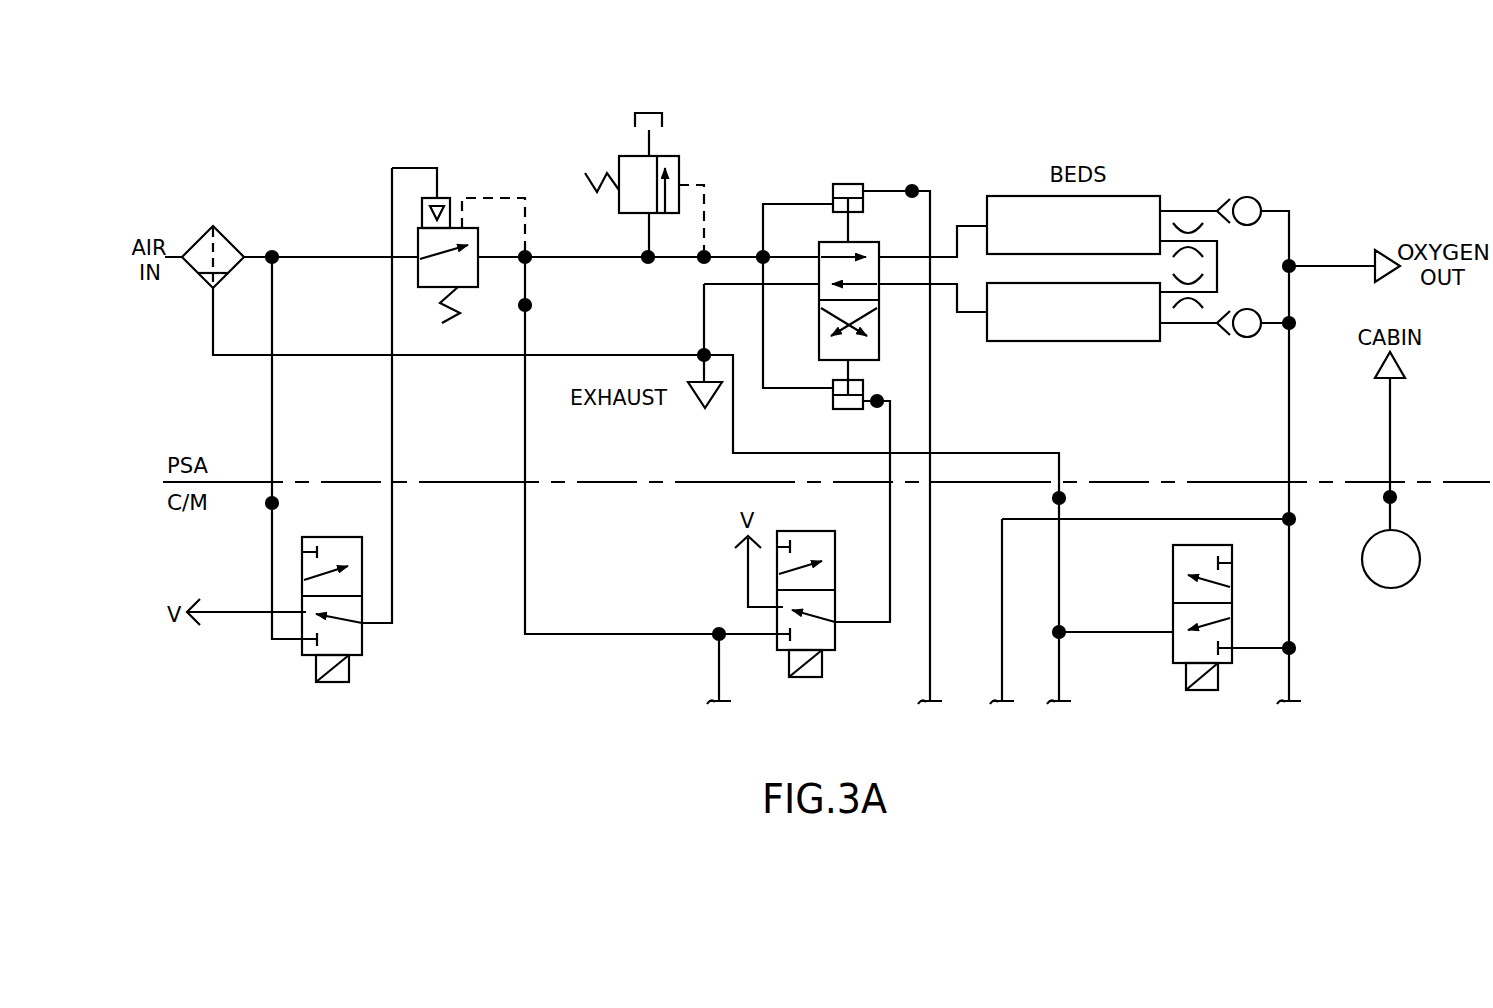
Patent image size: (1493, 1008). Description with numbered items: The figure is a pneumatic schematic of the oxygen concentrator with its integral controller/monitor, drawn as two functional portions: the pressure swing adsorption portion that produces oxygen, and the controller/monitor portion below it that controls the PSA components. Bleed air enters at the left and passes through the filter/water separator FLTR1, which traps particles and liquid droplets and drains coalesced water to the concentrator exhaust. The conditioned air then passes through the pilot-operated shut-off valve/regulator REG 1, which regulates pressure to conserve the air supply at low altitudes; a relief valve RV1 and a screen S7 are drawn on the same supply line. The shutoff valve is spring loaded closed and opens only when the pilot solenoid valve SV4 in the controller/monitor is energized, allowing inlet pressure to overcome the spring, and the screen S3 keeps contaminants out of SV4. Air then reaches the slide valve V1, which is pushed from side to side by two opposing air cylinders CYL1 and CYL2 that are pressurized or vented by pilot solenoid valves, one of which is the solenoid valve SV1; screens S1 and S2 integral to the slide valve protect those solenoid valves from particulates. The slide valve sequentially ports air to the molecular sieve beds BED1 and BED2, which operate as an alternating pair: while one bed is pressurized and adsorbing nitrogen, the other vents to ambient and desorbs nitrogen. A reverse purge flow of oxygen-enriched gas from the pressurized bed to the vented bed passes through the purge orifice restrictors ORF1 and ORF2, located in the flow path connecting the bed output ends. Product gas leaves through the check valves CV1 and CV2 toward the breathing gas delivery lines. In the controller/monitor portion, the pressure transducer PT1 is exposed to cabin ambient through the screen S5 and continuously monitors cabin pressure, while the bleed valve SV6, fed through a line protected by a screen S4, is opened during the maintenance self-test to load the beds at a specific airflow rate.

The filter/water separator FLTR1 is at (216, 229).
The shut-off valve/regulator REG 1 is at (494, 235).
The sensor S7 is at (541, 309).
The relief valve RV1 is at (644, 146).
The air cylinder CYL1 is at (848, 175).
The air cylinder CYL2 is at (835, 411).
The slide valve V1 is at (833, 301).
The screen S1 is at (913, 180).
The screen S2 is at (885, 386).
The screen S3 is at (289, 505).
The sensor S4 is at (1075, 500).
The screen S5 is at (1406, 500).
The molecular sieve bed BED1 is at (1073, 225).
The molecular sieve bed BED2 is at (1073, 312).
The purge orifice restrictor ORF1 is at (1225, 240).
The purge orifice restrictor ORF2 is at (1225, 293).
The check valve CV1 is at (1242, 198).
The check valve CV2 is at (1242, 339).
The pressure transducer PT1 is at (1391, 587).
The pilot solenoid valve SV4 is at (337, 638).
The pilot solenoid valve SV1 is at (812, 613).
The bleed valve SV6 is at (1202, 627).